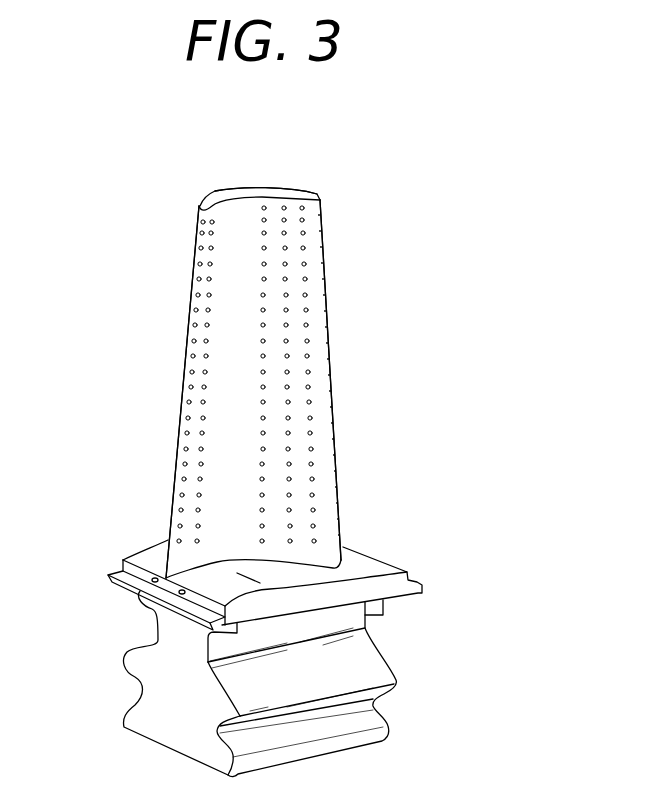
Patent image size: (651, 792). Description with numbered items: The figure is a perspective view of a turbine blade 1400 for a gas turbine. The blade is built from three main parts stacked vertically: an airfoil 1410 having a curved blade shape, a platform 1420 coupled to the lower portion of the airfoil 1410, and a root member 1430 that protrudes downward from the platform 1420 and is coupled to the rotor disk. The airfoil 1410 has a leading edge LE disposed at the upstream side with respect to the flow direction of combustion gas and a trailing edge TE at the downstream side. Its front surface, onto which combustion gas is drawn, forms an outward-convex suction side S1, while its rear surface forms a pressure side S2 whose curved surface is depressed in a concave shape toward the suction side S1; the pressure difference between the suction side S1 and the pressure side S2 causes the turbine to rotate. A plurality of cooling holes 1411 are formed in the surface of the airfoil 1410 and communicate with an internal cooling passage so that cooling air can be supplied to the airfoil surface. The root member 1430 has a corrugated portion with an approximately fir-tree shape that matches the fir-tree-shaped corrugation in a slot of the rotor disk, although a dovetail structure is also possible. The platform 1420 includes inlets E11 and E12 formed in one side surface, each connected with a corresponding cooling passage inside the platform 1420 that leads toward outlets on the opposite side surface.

The turbine blade 1400 is at (203, 166).
The airfoil 1410 is at (225, 483).
The cooling holes 1411 is at (305, 279).
The platform 1420 is at (366, 556).
The root member 1430 is at (367, 666).
The suction side S1 is at (290, 189).
The pressure side S2 is at (223, 351).
The leading edge LE is at (178, 425).
The trailing edge TE is at (336, 432).
The inlet E11 is at (150, 581).
The inlet E12 is at (157, 608).